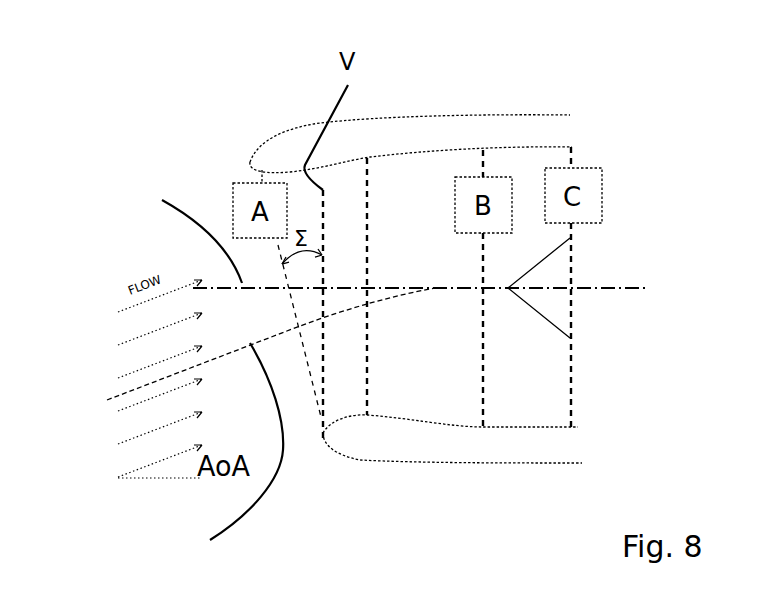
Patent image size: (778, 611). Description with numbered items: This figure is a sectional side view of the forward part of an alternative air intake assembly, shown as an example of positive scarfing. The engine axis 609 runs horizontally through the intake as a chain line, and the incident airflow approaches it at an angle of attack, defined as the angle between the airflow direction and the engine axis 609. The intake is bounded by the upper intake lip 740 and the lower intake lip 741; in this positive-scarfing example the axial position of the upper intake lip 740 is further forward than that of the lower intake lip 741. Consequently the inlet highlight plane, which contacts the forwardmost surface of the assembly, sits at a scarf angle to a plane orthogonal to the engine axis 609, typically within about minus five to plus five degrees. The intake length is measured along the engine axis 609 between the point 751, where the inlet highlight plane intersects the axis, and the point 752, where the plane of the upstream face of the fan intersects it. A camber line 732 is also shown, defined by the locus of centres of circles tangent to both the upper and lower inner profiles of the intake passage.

The upper intake lip 740 is at (295, 152).
The lower intake lip 741 is at (348, 442).
The engine axis 609 is at (175, 228).
The camber line 732 is at (218, 451).
The point on engine axis intersecting inlet highlight 751 is at (287, 289).
The point on engine axis intersecting upstream face of fan 752 is at (571, 288).